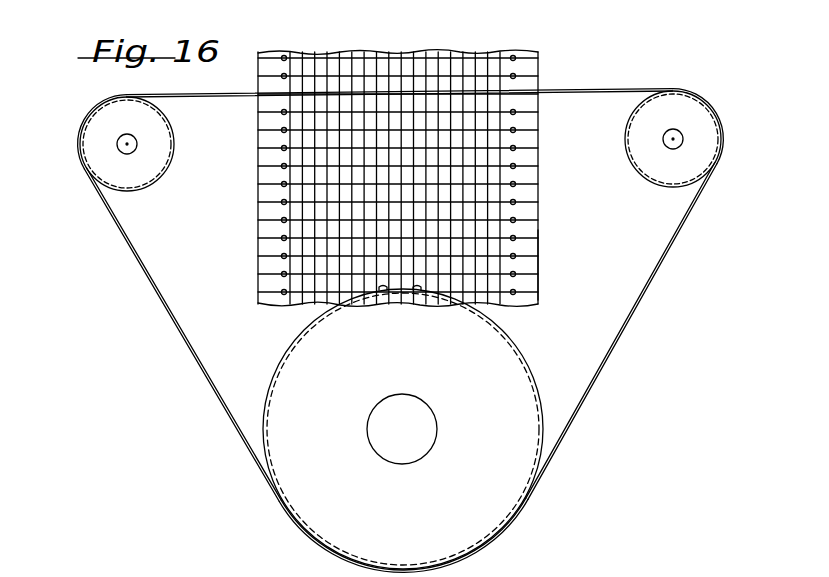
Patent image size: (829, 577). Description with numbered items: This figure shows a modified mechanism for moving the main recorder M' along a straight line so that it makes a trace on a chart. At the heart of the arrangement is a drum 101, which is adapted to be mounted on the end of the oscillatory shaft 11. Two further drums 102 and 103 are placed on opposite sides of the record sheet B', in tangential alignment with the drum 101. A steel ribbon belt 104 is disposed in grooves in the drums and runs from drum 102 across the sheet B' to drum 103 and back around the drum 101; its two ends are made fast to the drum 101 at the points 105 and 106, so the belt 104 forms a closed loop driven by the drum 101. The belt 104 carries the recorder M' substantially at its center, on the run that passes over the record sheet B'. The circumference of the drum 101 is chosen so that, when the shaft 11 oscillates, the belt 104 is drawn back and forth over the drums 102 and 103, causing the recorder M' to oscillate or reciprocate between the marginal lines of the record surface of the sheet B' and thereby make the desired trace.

The oscillatory shaft 11 is at (380, 416).
The drum 101 is at (487, 525).
The drum 102 is at (108, 172).
The drum 103 is at (702, 164).
The steel ribbon belt 104 is at (585, 397).
The belt end fastening 105 is at (383, 290).
The belt end fastening 106 is at (416, 291).
The main recorder M' is at (398, 159).
The record sheet B' is at (564, 265).